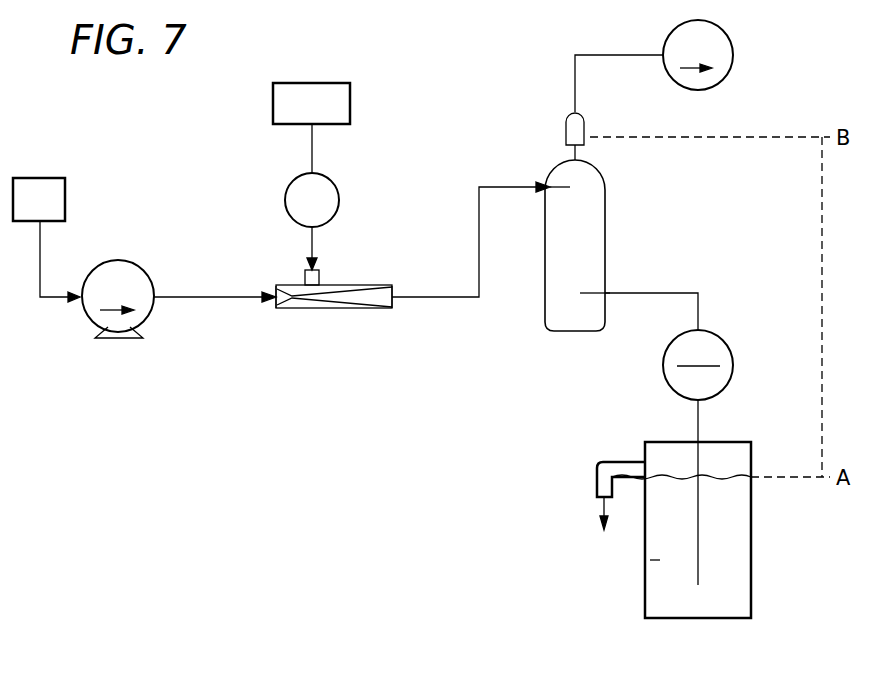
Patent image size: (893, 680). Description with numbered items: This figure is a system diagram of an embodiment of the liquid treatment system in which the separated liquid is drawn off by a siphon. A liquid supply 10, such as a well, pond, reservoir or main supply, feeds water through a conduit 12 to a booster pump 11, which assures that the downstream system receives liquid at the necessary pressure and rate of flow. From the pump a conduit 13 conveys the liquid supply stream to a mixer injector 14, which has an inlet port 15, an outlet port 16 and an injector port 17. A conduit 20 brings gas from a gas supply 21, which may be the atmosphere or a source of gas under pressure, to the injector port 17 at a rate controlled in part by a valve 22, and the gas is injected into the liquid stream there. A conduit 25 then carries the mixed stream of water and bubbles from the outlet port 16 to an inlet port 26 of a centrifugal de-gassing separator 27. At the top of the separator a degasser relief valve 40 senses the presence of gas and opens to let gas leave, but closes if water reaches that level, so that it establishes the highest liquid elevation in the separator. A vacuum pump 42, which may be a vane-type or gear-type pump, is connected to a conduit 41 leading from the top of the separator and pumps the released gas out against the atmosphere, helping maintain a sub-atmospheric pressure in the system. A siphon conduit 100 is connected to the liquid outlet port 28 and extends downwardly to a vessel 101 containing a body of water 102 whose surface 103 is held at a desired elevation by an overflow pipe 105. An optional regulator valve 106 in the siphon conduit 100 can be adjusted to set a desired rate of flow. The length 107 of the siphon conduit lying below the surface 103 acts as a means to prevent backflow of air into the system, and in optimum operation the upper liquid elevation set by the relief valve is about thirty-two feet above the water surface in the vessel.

The liquid supply 10 is at (40, 178).
The booster pump 11 is at (128, 262).
The conduit 12 is at (54, 300).
The conduit 13 is at (196, 300).
The mixer injector 14 is at (316, 309).
The inlet port 15 is at (276, 308).
The outlet port 16 is at (392, 308).
The injector port 17 is at (320, 272).
The conduit 20 is at (313, 155).
The gas supply 21 is at (328, 83).
The valve 22 is at (340, 200).
The conduit 25 is at (448, 300).
The inlet port 26 is at (548, 190).
The centrifugal de-gassing separator 27 is at (545, 320).
The liquid outlet port 28 is at (603, 295).
The degasser relief valve 40 is at (584, 120).
The conduit 41 is at (575, 78).
The vacuum pump 42 is at (700, 20).
The siphon conduit 100 is at (650, 292).
The vessel 101 is at (752, 560).
The body of water 102 is at (662, 557).
The surface 103 is at (730, 480).
The overflow pipe 105 is at (597, 472).
The regulator valve 106 is at (708, 334).
The length of the siphon conduit 107 is at (698, 585).